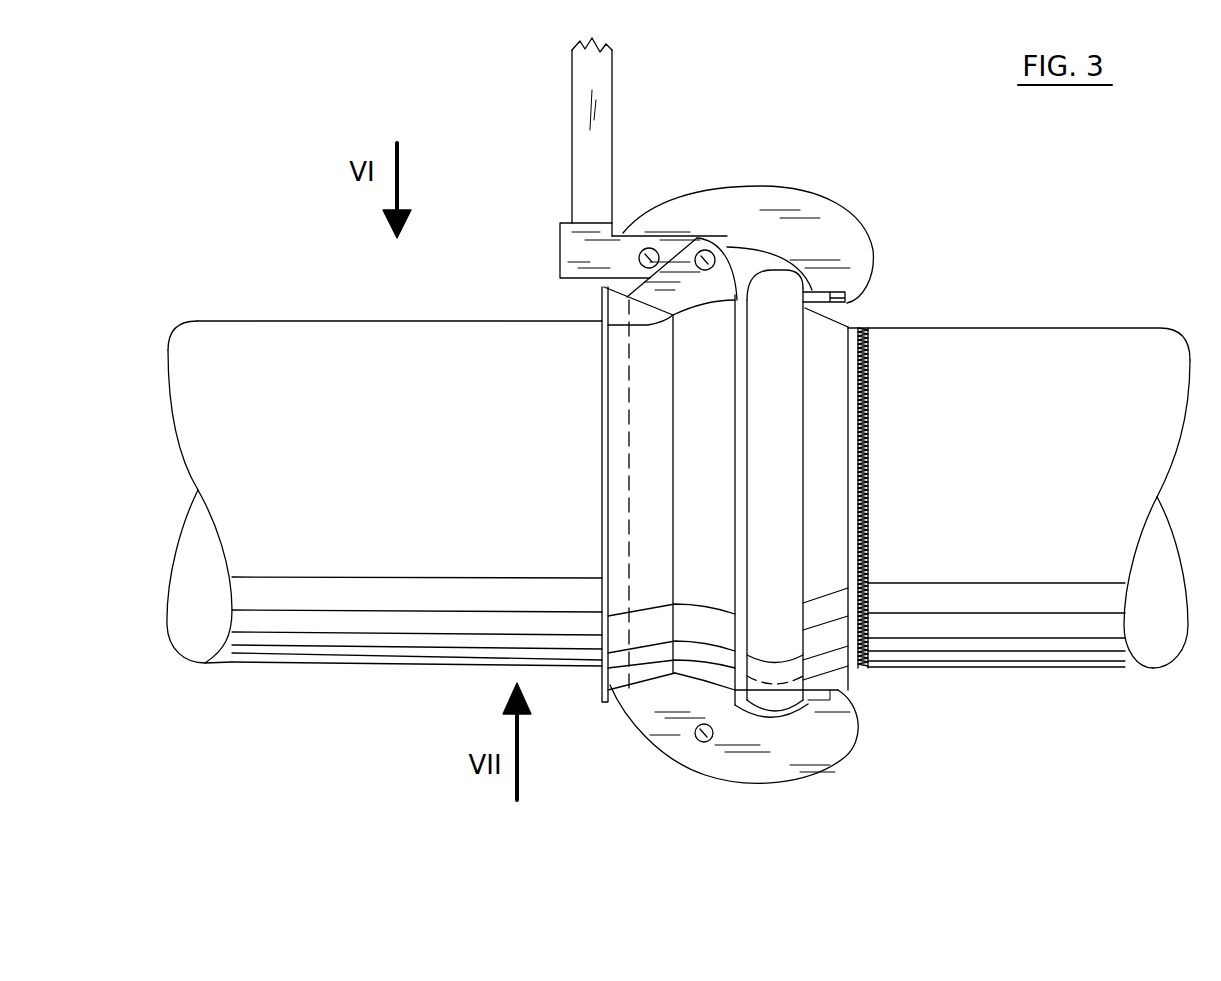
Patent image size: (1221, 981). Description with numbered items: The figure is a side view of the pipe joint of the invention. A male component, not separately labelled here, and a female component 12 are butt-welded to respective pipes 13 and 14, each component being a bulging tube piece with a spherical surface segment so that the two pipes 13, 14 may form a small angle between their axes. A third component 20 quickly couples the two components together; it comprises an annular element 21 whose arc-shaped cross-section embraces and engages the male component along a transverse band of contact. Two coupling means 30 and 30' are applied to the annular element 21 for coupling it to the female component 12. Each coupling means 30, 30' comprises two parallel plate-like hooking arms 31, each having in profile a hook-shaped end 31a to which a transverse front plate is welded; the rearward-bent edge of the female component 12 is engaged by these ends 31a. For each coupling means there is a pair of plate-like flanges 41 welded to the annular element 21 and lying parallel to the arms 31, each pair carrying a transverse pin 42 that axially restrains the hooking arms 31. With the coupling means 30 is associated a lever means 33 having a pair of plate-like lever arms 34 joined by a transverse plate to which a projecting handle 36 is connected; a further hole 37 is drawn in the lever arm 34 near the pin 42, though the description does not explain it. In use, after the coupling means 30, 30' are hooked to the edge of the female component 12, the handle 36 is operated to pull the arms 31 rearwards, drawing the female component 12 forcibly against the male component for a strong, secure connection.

The female component 12 is at (805, 302).
The pipe 13 is at (407, 660).
The pipe 14 is at (1013, 327).
The third component 20 is at (595, 494).
The annular element 21 is at (600, 403).
The coupling means 30 is at (791, 214).
The coupling means 30' is at (788, 734).
The hooking arm 31 is at (782, 206).
The hook-shaped end 31a is at (832, 293).
The lever means 33 is at (553, 219).
The lever arm 34 is at (667, 243).
The projecting handle 36 is at (572, 95).
The bolt hole 37 is at (647, 248).
The flange 41 is at (735, 295).
The transverse pin 42 is at (703, 258).